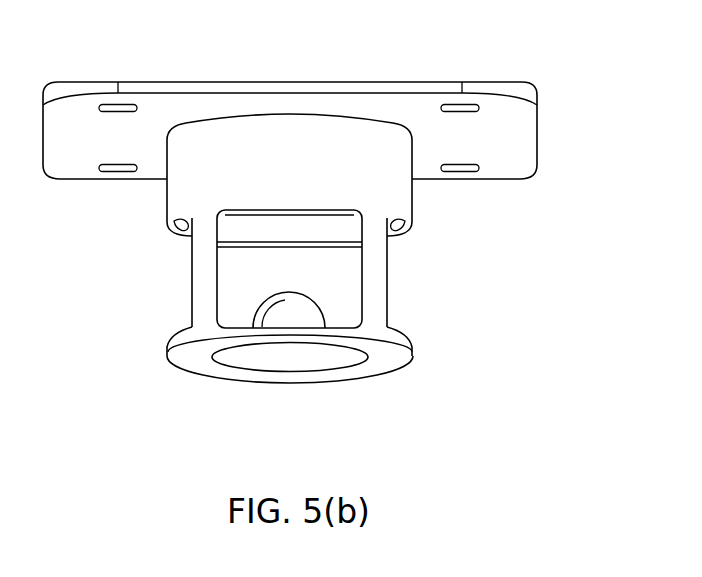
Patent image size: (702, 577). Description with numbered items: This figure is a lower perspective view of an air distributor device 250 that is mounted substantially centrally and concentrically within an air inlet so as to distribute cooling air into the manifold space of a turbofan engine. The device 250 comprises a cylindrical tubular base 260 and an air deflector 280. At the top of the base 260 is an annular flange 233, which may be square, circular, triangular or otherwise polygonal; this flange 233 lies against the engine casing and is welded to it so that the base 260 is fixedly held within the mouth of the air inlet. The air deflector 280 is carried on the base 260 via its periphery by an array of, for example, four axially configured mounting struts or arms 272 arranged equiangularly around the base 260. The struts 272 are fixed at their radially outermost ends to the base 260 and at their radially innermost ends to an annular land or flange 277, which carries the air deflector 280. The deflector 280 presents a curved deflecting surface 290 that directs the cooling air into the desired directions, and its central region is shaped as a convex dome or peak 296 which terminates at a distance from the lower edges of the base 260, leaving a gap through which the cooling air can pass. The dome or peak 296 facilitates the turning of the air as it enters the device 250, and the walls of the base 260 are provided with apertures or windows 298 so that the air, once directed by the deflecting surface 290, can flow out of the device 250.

The annular flange 233 is at (421, 87).
The cylindrical tubular base 260 is at (180, 194).
The mounting struts or arms 272 is at (378, 261).
The curved deflecting surface 290 is at (255, 326).
The air deflector 280 is at (313, 318).
The convex dome or peak 296 is at (292, 288).
The apertures or windows 298 is at (175, 256).
The annular land or flange 277 is at (198, 363).
The air distributor device 250 is at (446, 366).